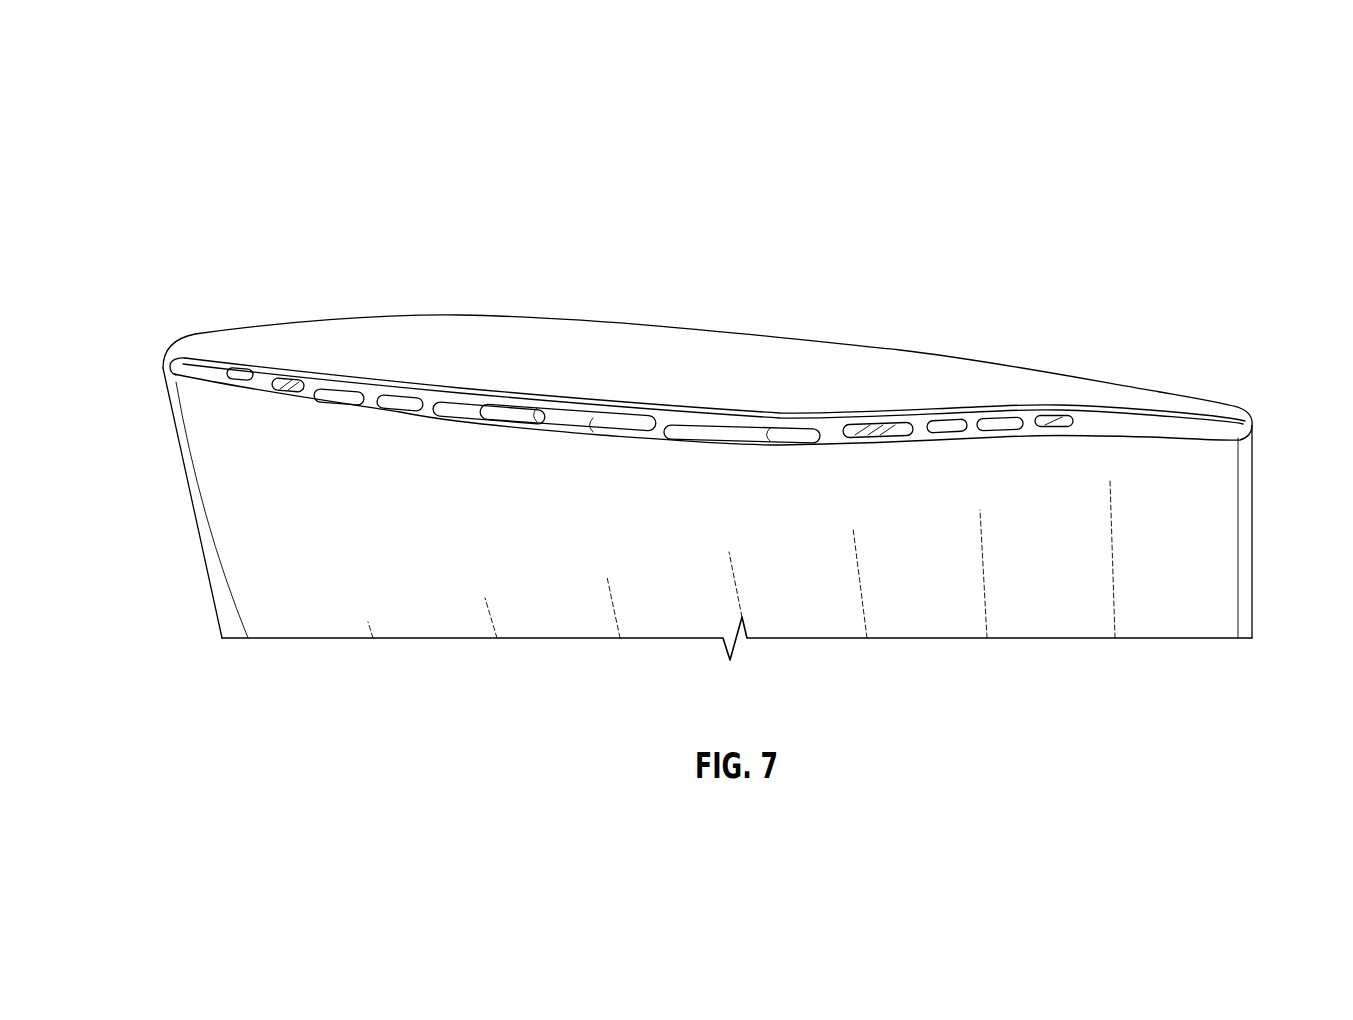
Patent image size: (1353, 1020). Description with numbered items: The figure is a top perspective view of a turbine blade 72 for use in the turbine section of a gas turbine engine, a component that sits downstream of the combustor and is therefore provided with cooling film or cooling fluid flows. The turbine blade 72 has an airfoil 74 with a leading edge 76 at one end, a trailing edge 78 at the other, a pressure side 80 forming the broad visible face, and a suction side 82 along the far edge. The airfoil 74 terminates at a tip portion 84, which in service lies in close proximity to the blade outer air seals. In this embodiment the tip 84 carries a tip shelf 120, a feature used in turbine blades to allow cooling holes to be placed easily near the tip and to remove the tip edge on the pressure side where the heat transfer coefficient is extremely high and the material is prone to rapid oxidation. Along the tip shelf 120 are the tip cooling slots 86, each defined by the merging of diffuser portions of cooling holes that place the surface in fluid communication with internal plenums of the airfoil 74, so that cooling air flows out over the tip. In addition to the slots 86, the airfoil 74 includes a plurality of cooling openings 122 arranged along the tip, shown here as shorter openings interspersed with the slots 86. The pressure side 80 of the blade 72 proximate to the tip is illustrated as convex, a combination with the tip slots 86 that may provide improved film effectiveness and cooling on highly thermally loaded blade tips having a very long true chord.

The turbine blade 72 is at (156, 126).
The airfoil 74 is at (238, 480).
The leading edge 76 is at (210, 568).
The trailing edge 78 is at (1247, 593).
The pressure side 80 is at (393, 577).
The suction side 82 is at (1160, 392).
The tip portion 84 is at (436, 322).
The cooling slot 86 is at (492, 418).
The tip shelf 120 is at (183, 358).
The cooling openings 122 is at (405, 403).